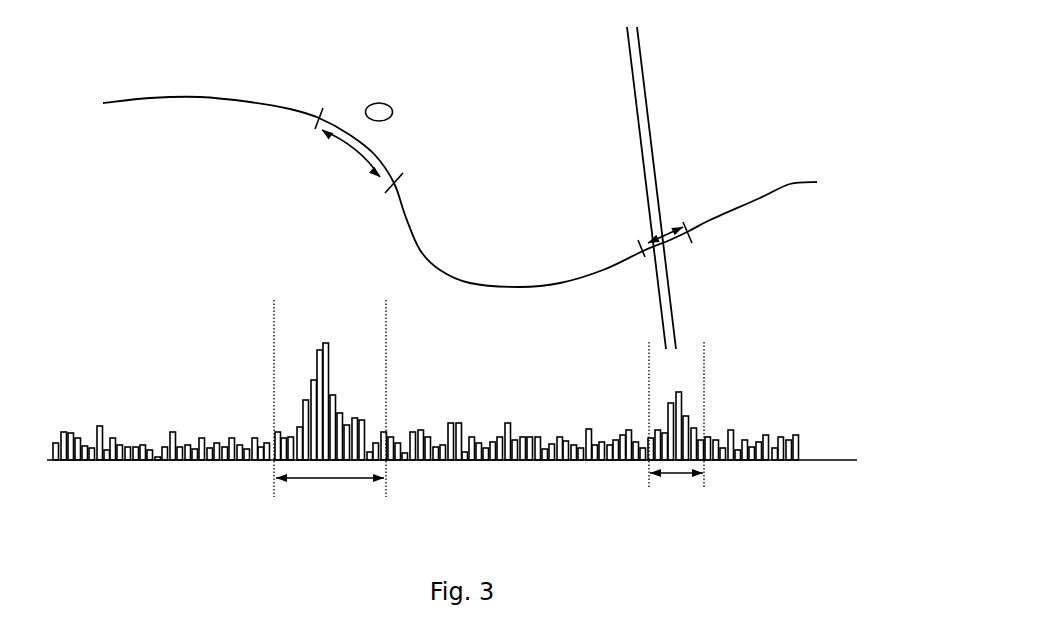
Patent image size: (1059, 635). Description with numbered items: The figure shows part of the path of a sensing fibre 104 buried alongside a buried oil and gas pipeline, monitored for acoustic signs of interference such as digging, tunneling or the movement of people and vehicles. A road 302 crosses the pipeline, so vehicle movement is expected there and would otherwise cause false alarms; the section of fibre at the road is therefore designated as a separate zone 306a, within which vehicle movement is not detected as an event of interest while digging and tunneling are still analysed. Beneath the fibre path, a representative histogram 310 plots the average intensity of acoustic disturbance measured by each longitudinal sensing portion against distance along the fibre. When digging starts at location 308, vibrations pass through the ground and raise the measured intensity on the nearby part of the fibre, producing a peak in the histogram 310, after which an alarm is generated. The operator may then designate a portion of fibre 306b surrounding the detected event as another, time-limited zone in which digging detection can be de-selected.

The sensing fibre 104 is at (789, 182).
The road 302 is at (647, 81).
The location of digging 308 is at (391, 108).
The zone at the road 306a is at (650, 241).
The zone surrounding the detected event 306b is at (338, 308).
The histogram 310 is at (162, 414).